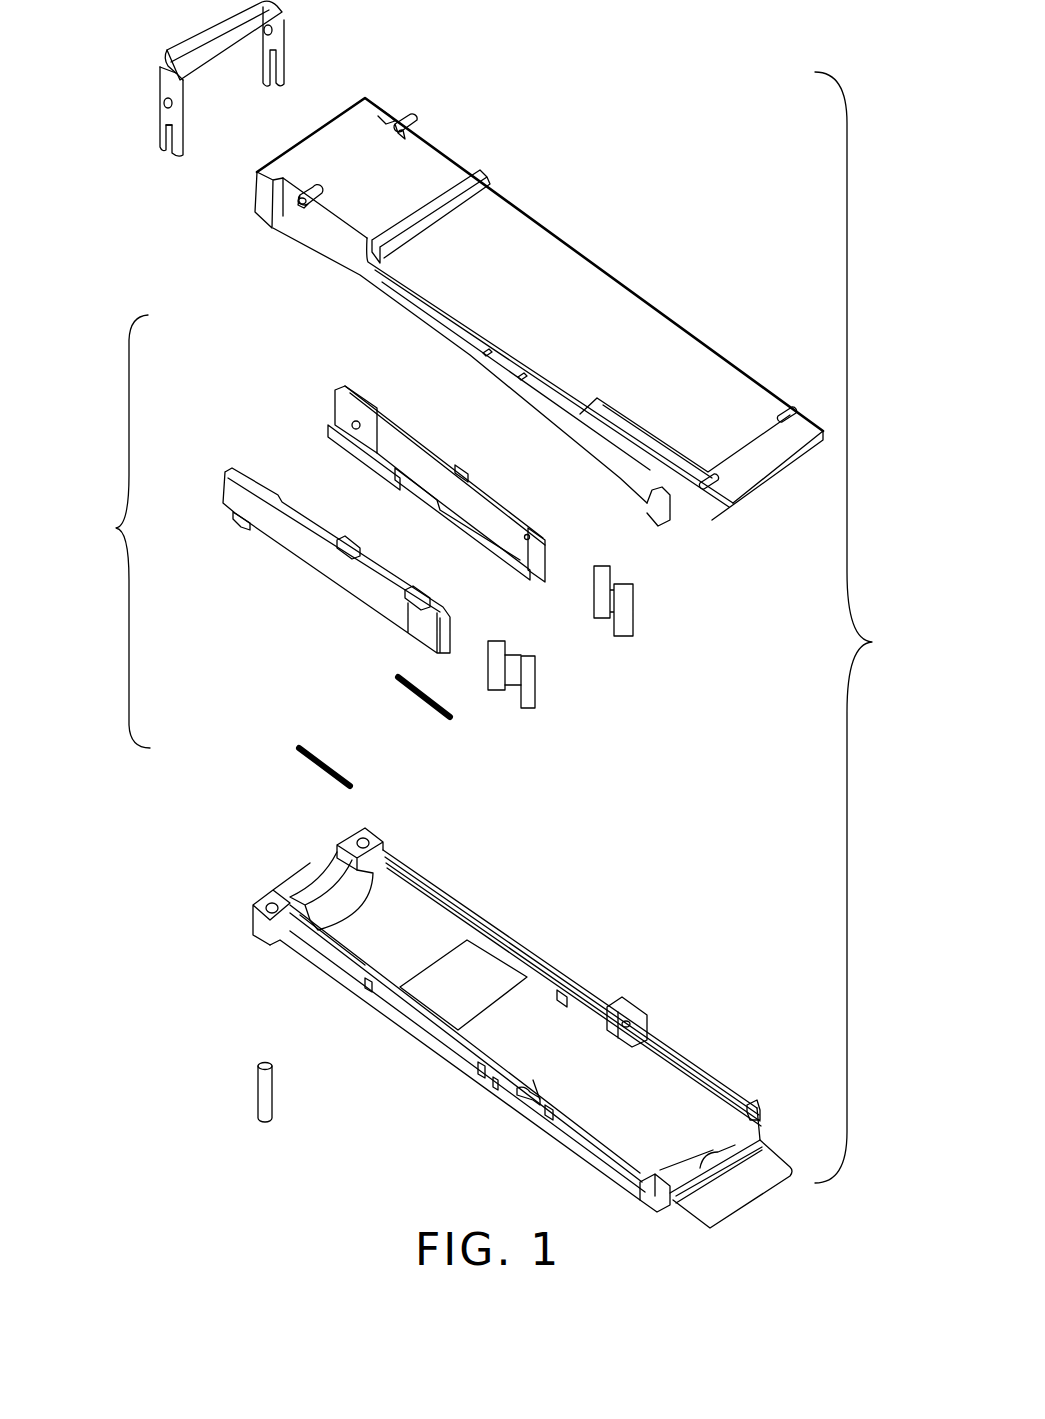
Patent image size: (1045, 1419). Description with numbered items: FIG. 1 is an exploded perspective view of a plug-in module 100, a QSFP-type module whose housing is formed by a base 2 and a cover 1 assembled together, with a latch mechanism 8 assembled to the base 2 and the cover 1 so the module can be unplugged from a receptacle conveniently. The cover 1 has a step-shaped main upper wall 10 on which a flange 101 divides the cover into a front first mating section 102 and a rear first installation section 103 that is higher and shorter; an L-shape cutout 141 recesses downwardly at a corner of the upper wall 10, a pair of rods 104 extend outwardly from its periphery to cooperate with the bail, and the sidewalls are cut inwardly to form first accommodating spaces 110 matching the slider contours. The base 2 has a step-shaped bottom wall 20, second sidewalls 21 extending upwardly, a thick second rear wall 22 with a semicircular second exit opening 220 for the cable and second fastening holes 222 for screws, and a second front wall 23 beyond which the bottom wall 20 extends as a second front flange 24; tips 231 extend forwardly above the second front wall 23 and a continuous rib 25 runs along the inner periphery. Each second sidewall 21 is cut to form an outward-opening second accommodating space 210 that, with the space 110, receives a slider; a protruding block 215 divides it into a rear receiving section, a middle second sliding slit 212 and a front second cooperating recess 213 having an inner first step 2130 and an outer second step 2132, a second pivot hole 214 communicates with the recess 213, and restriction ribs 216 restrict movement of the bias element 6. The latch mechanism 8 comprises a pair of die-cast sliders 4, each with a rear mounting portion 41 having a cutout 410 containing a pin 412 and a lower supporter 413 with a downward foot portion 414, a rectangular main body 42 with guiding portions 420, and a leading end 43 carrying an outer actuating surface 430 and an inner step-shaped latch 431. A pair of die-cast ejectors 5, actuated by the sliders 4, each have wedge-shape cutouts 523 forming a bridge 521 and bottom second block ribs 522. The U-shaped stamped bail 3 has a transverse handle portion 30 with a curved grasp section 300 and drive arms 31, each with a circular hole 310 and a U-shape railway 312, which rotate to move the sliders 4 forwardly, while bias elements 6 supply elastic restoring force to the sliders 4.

The cover 1 is at (504, 333).
The main upper wall 10 is at (504, 333).
The flange 101 is at (470, 165).
The first mating section 102 is at (538, 247).
The first installation section 103 is at (423, 175).
The rods 104 is at (300, 203).
The first accommodating spaces 110 is at (328, 240).
The L-shape cutout 141 is at (675, 478).
The base 2 is at (486, 1014).
The bottom wall 20 is at (486, 1014).
The second sidewalls 21 is at (487, 943).
The second rear wall 22 is at (267, 873).
The second exit opening 220 is at (322, 903).
The second fastening holes 222 is at (268, 906).
The second front wall 23 is at (736, 1104).
The tips 231 is at (757, 1110).
The second front flange 24 is at (747, 1182).
The continuous rib 25 is at (413, 910).
The second accommodating space 210 is at (430, 1059).
The second sliding slit 212 is at (422, 1042).
The second cooperating recess 213 is at (456, 1126).
The inner first step 2130 is at (480, 1078).
The outer second step 2132 is at (493, 1080).
The second pivot hole 214 is at (550, 1112).
The protruding block 215 is at (367, 985).
The restriction ribs 216 is at (358, 988).
The bail 3 is at (228, 106).
The handle portion 30 is at (181, 106).
The grasp section 300 is at (193, 43).
The drive arms 31 is at (135, 139).
The circular hole 310 is at (164, 104).
The U-shape railway 312 is at (166, 140).
The sliders 4 is at (372, 504).
The mounting portion 41 is at (392, 451).
The cutout 410 is at (338, 403).
The pin 412 is at (354, 421).
The lower supporter 413 is at (372, 482).
The foot portion 414 is at (238, 512).
The main body 42 is at (463, 501).
The guiding portions 420 is at (458, 470).
The leading end 43 is at (505, 544).
The actuating surface 430 is at (301, 567).
The latch 431 is at (527, 541).
The ejectors 5 is at (606, 660).
The bridge 521 is at (513, 694).
The second block ribs 522 is at (504, 654).
The wedge-shape cutouts 523 is at (515, 681).
The bias elements 6 is at (287, 744).
The latch mechanism 8 is at (120, 531).
The plug-in module 100 is at (866, 627).